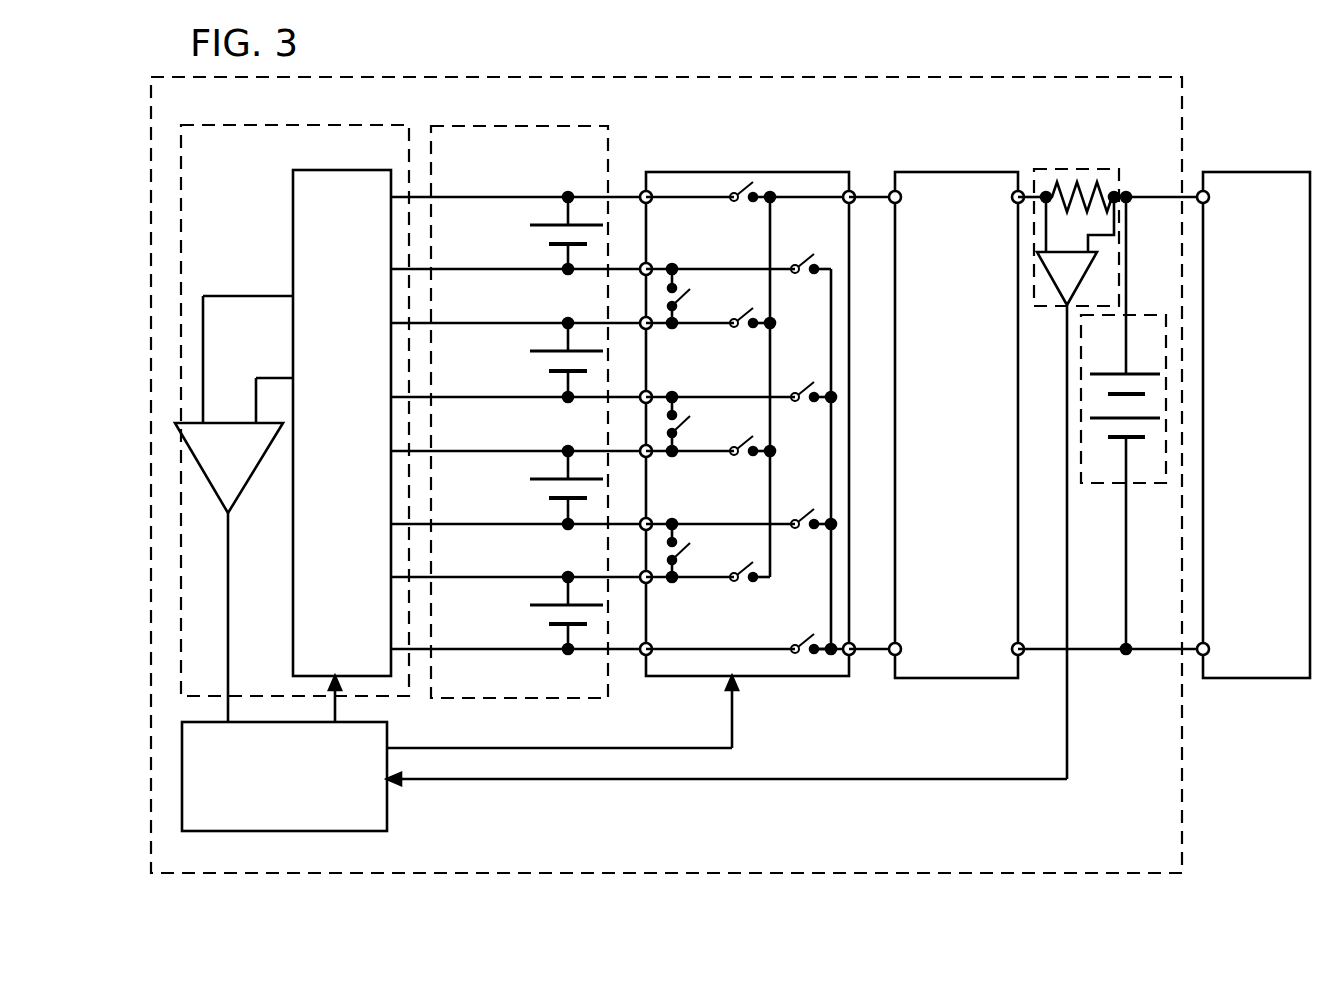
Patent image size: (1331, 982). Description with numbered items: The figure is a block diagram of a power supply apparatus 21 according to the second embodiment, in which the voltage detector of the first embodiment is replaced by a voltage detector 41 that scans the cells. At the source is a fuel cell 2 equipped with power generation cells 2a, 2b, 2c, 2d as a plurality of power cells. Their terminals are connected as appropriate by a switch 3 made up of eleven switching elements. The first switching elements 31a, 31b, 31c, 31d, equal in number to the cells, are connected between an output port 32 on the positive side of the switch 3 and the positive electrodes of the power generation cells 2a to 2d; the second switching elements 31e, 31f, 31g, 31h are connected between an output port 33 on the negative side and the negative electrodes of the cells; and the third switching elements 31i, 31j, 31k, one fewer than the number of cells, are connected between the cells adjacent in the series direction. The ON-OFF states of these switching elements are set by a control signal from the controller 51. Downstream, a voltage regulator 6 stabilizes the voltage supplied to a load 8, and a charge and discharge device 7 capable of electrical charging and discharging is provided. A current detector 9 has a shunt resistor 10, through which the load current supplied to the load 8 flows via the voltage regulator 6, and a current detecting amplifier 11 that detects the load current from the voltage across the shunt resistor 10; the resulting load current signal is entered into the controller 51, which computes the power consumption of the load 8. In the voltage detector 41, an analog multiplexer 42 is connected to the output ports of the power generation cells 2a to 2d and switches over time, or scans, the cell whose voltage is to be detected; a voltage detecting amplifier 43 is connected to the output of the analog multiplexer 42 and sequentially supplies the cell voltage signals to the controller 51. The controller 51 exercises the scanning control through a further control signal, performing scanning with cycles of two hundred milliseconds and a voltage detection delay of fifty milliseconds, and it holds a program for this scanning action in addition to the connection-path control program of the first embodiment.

The power supply apparatus 21 is at (1183, 857).
The fuel cell 2 is at (528, 483).
The power generation cell 2a is at (557, 232).
The power generation cell 2b is at (557, 360).
The power generation cell 2c is at (557, 488).
The power generation cell 2d is at (557, 614).
The switch 3 is at (795, 432).
The first switching element 31a is at (773, 185).
The first switching element 31b is at (743, 333).
The first switching element 31c is at (742, 461).
The first switching element 31d is at (746, 586).
The second switching element 31e is at (815, 250).
The second switching element 31f is at (805, 378).
The second switching element 31g is at (806, 502).
The second switching element 31h is at (806, 627).
The third switching element 31i is at (699, 296).
The third switching element 31j is at (699, 424).
The third switching element 31k is at (703, 550).
The output port on the positive side 32 is at (856, 192).
The output port on the negative side 33 is at (851, 660).
The voltage detector 41 is at (300, 124).
The analog multiplexer 42 is at (366, 678).
The voltage detecting amplifier 43 is at (218, 420).
The controller 51 is at (387, 795).
The voltage regulator 6 is at (1008, 678).
The charge and discharge device 7 is at (1150, 315).
The load 8 is at (1217, 678).
The current detector 9 is at (1043, 411).
The shunt resistor 10 is at (1075, 190).
The current detecting amplifier 11 is at (1045, 300).